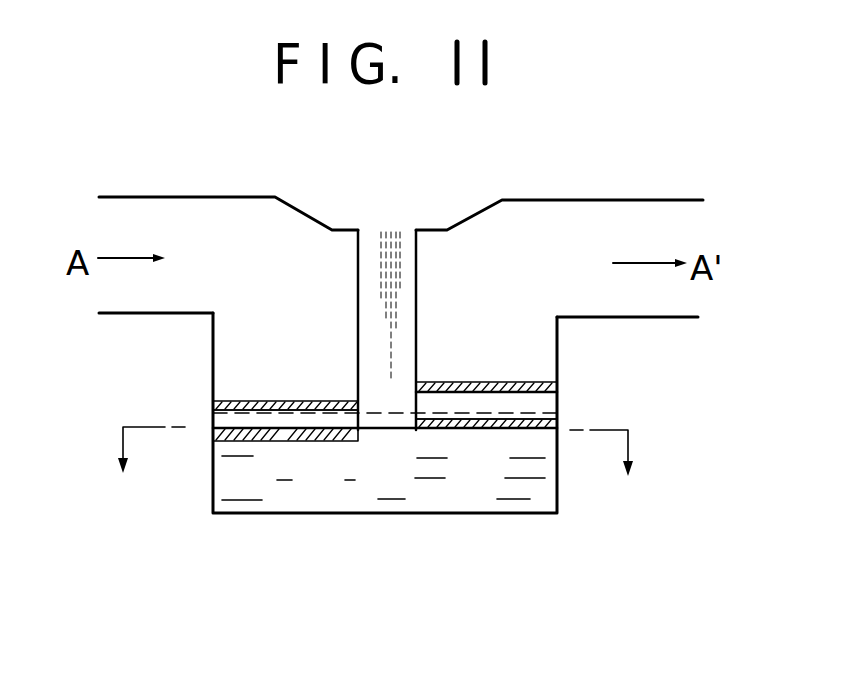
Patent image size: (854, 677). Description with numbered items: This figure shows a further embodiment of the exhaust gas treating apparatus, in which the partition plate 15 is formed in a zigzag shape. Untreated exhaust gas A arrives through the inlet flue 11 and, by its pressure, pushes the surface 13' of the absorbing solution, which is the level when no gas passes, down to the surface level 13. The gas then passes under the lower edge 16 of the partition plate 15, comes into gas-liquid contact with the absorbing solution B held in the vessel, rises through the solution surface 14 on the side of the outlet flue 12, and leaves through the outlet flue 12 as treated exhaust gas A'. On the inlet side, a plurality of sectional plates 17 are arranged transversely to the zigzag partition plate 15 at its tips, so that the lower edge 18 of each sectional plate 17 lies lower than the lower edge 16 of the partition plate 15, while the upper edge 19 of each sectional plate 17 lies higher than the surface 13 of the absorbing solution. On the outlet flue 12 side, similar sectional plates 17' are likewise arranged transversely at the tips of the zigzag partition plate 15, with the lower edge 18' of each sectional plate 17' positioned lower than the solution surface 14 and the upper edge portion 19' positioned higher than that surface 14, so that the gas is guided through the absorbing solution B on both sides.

The inlet flue 11 is at (150, 217).
The outlet flue 12 is at (568, 222).
The surface level of the absorbing solution 13 is at (285, 468).
The surface of the absorbing solution 13' is at (285, 378).
The solution surface on the outlet flue side 14 is at (447, 392).
The partition plate 15 is at (416, 272).
The lower edge of the partition plate 16 is at (383, 430).
The sectional plates 17 is at (263, 443).
The sectional plates 17' is at (522, 396).
The lower edge of each sectional plate 18 is at (283, 468).
The lower edge of each sectional plate 18' is at (486, 456).
The upper edge of each sectional plate 19 is at (286, 373).
The upper edge portion of each sectional plate 19' is at (485, 352).
The absorbing solution B is at (412, 498).